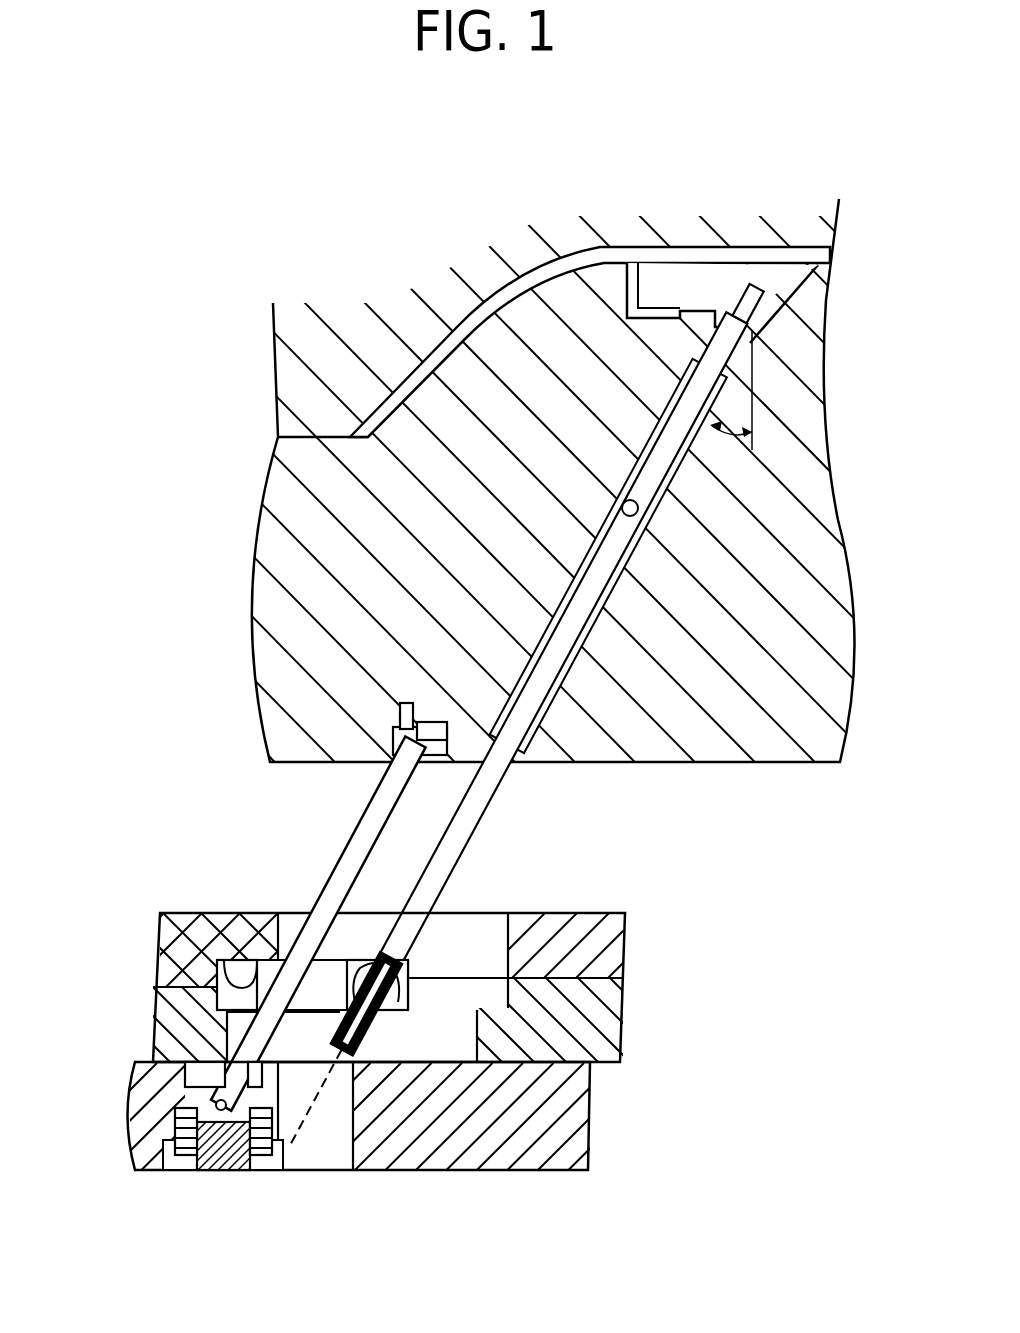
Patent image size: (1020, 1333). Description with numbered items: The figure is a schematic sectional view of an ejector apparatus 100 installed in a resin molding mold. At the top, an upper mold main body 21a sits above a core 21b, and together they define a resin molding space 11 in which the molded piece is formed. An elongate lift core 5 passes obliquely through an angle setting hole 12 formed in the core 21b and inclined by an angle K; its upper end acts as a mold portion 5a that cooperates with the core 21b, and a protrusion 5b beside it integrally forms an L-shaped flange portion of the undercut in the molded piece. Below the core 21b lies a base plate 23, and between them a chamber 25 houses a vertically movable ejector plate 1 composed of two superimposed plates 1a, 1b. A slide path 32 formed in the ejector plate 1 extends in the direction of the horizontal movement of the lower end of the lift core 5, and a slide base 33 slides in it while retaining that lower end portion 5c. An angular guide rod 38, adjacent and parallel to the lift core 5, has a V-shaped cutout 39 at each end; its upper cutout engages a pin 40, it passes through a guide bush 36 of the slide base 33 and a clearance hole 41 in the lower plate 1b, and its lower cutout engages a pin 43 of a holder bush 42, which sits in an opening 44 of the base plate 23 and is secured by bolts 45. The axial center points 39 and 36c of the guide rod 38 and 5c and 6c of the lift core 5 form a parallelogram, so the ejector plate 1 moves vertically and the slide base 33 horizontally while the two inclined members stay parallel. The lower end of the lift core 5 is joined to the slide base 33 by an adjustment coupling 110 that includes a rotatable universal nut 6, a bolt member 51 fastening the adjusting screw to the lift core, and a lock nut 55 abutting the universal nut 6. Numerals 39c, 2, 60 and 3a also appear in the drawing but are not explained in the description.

The ejector apparatus 100 is at (163, 463).
The upper mold main body 21a is at (277, 336).
The core 21b is at (265, 516).
The chamber 25 is at (274, 780).
The protrusion 5b is at (660, 290).
The mold portion 5a is at (715, 275).
The resin molding space 11 is at (790, 256).
The angle setting hole 12 is at (625, 500).
The guide projection 39c is at (405, 700).
The pin 40 is at (433, 716).
The V-shaped cutout 39 is at (390, 745).
The lower end portion of the lift core 5c is at (510, 748).
The lift core 5 is at (489, 800).
The angular guide rod 38 is at (358, 838).
The axial center point 36c is at (228, 1006).
The guide bush 36 is at (215, 957).
The slide base 33 is at (312, 975).
The slide path 32 is at (500, 925).
The universal nut 6 is at (438, 995).
The base member 2 is at (158, 940).
The ejector plate 1 is at (103, 920).
The plate 1a is at (612, 948).
The lower plate 1b is at (615, 1020).
The pin 43 is at (283, 1028).
The opening 44 is at (183, 1078).
The base plate 23 is at (590, 1108).
The bolts 45 is at (183, 1170).
The holder bush 42 is at (215, 1170).
The bolt member 51 is at (320, 1067).
The actuator 60 is at (352, 1065).
The lock nut 55 is at (410, 1065).
The adjustment coupling 110 is at (410, 1065).
The axial center point 6c is at (396, 1012).
The clearance hole 41 is at (432, 1030).
The pivot shaft 3a is at (445, 1025).